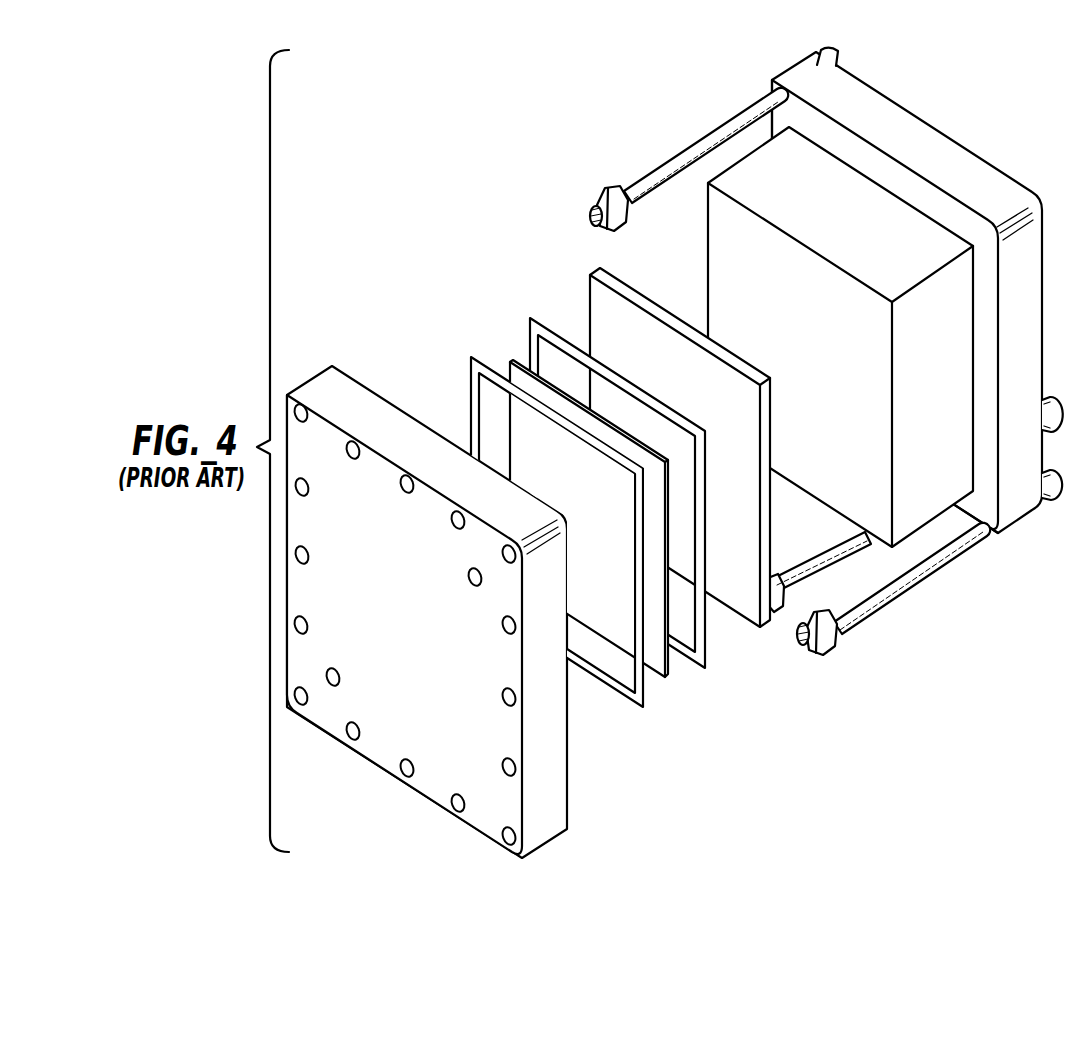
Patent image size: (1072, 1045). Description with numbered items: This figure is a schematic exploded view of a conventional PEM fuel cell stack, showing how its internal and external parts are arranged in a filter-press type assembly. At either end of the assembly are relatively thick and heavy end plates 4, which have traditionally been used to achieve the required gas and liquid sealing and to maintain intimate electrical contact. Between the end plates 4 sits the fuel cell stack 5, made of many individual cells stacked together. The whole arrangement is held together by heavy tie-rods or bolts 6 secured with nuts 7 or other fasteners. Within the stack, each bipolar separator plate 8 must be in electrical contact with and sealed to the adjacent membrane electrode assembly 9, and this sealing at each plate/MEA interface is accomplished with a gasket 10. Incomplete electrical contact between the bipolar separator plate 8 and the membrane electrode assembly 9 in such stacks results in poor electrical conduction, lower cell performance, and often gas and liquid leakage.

The end plate 4 is at (308, 382).
The fuel cell stack 5 is at (748, 172).
The tie-rod or bolt 6 is at (655, 168).
The nut 7 is at (607, 190).
The bipolar separator plate 8 is at (592, 273).
The membrane electrode assembly 9 is at (510, 358).
The gasket 10 is at (530, 317).